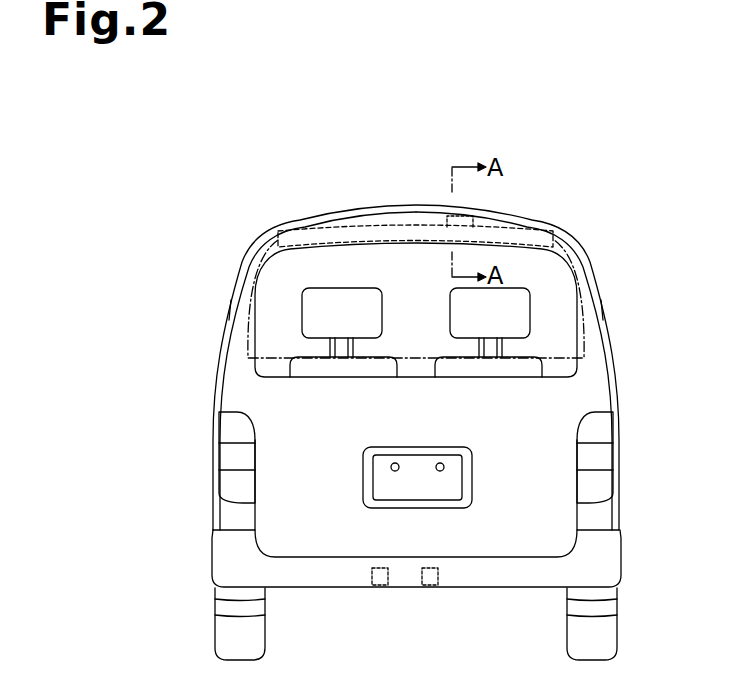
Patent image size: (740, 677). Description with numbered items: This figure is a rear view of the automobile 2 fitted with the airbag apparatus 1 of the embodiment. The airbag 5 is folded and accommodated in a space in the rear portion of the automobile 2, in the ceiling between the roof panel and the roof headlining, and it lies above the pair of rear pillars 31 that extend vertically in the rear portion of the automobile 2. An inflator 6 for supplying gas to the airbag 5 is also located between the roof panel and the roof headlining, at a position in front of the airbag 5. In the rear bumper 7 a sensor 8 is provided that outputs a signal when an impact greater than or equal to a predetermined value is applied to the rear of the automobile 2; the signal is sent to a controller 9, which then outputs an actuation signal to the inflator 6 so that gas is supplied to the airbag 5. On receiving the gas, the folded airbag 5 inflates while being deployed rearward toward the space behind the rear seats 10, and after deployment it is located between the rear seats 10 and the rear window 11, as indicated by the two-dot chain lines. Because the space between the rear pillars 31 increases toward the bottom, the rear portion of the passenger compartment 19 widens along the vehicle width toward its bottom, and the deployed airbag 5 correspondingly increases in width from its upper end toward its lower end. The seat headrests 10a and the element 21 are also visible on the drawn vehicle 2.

The airbag apparatus 1 is at (396, 229).
The automobile 2 is at (302, 199).
The airbag 5 is at (524, 237).
The inflator 6 is at (475, 217).
The rear bumper 7 is at (493, 580).
The sensor 8 is at (430, 587).
The controller 9 is at (380, 587).
The rear seats 10 is at (453, 378).
The headrest 10a is at (340, 297).
The rear window 11 is at (553, 292).
The passenger compartment 19 is at (283, 293).
The back door 21 is at (600, 389).
The rear pillars 31 is at (229, 311).